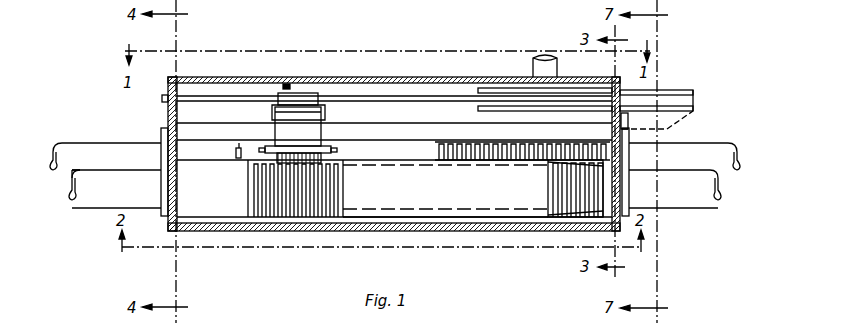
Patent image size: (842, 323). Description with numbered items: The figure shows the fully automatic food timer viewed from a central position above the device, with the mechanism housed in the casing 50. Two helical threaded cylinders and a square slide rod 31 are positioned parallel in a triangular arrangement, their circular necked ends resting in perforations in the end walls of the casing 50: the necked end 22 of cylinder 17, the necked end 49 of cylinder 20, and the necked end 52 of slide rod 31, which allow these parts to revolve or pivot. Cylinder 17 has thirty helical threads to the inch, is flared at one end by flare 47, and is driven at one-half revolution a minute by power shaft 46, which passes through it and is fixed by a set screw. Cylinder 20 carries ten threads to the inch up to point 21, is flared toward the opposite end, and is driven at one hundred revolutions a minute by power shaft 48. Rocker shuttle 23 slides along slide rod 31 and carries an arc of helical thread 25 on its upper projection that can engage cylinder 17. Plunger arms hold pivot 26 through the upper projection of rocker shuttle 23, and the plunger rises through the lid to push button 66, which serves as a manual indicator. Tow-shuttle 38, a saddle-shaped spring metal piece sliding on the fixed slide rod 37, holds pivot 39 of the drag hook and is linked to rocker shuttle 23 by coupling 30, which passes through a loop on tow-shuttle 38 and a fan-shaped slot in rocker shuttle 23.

The helical threaded cylinder 17 is at (498, 192).
The helical threaded cylinder 20 is at (437, 146).
The point 21 is at (239, 143).
The necked end 22 is at (168, 228).
The rocker shuttle 23 is at (298, 128).
The helical thread 25 is at (306, 160).
The pivot 26 is at (264, 152).
The coupling 30 is at (325, 120).
The slide rod 31 is at (202, 132).
The slide rod 37 is at (206, 100).
The tow-shuttle 38 is at (298, 98).
The pivot 39 is at (286, 84).
The power shaft 46 is at (115, 193).
The flare 47 is at (604, 192).
The power shaft 48 is at (82, 152).
The necked end 49 is at (162, 140).
The casing 50 is at (481, 96).
The necked end 52 is at (630, 102).
The push button 66 is at (485, 321).